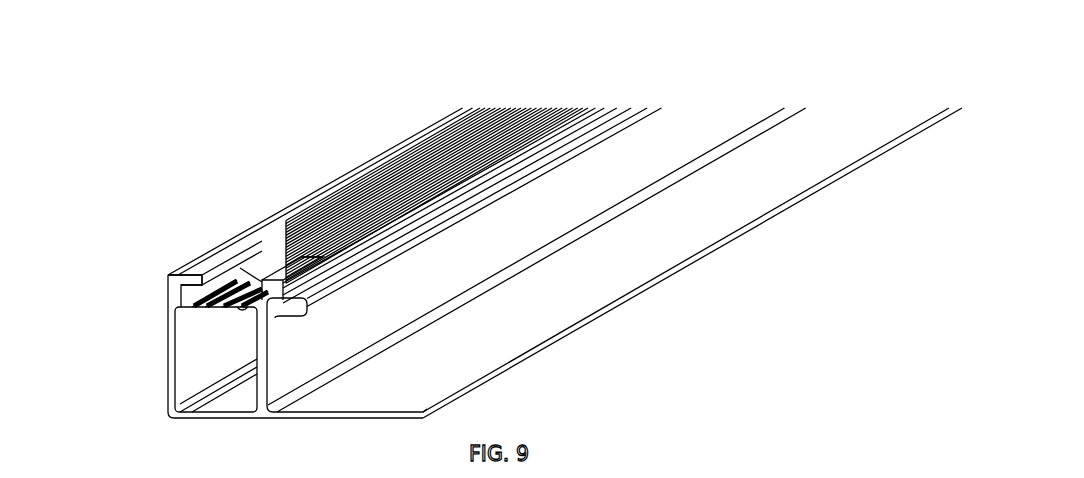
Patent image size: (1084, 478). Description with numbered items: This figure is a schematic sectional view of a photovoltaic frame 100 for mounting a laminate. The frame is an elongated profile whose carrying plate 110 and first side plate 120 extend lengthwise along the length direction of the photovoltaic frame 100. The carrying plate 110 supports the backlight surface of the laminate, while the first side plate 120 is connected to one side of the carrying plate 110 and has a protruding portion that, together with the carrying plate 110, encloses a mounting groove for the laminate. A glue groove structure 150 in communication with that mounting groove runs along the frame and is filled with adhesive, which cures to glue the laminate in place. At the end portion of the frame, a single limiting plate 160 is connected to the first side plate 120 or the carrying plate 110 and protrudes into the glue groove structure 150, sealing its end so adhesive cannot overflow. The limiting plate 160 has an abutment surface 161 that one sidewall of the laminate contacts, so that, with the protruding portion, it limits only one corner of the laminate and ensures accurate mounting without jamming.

The photovoltaic frame 100 is at (502, 216).
The carrying plate 110 is at (203, 275).
The first side plate 120 is at (167, 290).
The glue groove structure 150 is at (450, 158).
The limiting plate 160 is at (262, 280).
The abutment surface 161 is at (300, 240).